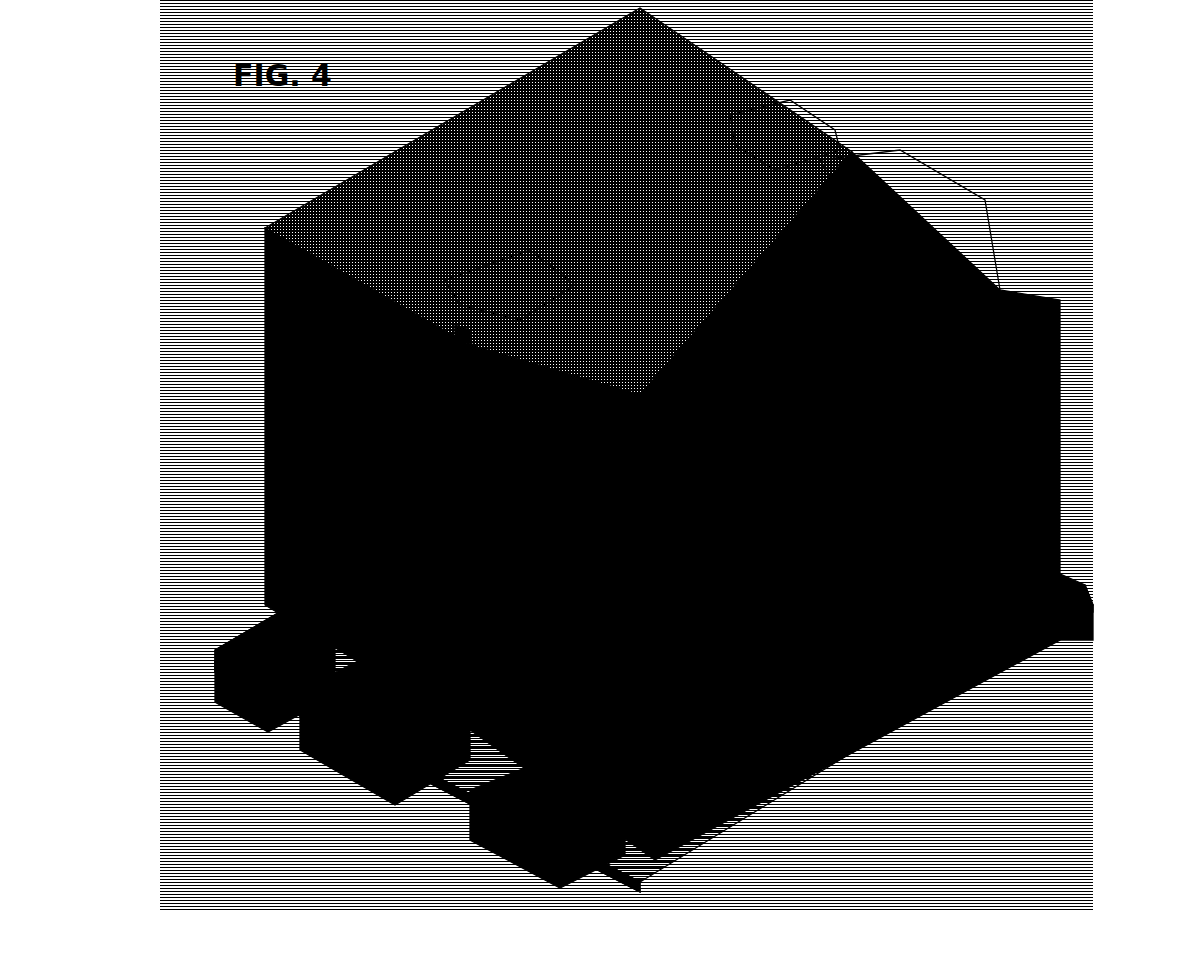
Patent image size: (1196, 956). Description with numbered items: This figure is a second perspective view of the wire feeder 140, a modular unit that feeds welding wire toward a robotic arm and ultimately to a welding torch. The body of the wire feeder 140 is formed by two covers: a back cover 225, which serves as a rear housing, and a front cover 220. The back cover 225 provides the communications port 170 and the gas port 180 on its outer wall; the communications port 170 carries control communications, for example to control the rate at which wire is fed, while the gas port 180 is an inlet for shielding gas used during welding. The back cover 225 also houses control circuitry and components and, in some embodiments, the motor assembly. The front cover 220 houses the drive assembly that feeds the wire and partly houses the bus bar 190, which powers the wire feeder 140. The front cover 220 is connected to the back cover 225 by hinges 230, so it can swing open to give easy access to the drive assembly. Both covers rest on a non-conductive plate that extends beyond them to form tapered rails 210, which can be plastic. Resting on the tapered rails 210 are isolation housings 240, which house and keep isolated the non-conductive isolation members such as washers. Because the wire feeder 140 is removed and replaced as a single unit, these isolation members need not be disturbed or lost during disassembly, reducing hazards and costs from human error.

The wire feeder 140 is at (654, 696).
The communications port 170 is at (215, 246).
The gas port 180 is at (215, 384).
The bus bar 190 is at (215, 524).
The tapered rails 210 is at (215, 716).
The front cover 220 is at (850, 505).
The back cover 225 is at (458, 19).
The hinges 230 is at (795, 65).
The isolation housings 240 is at (305, 748).